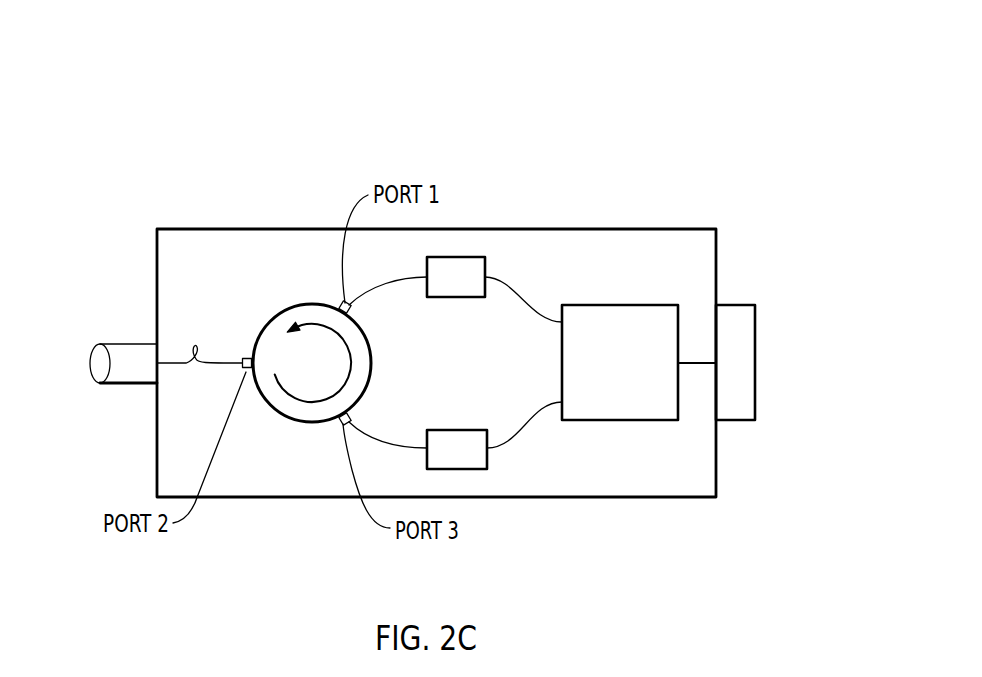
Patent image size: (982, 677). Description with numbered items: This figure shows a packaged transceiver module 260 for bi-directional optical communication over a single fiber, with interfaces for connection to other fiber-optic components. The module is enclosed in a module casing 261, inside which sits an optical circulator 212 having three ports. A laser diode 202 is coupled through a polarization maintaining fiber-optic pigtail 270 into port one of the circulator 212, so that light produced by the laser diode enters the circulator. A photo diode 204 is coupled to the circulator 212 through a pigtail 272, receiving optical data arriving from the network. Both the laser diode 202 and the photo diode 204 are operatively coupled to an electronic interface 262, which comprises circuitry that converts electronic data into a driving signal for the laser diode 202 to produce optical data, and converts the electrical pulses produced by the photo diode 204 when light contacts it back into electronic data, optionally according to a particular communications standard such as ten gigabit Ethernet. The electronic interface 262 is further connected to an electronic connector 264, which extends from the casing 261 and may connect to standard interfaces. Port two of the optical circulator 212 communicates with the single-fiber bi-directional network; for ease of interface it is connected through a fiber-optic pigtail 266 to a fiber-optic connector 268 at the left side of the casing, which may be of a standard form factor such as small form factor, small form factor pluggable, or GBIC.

The packaged transceiver module 260 is at (533, 106).
The module casing 261 is at (233, 229).
The laser diode 202 is at (455, 257).
The photo diode 204 is at (457, 470).
The optical circulator 212 is at (312, 424).
The electronic interface 262 is at (655, 305).
The electronic connector 264 is at (757, 363).
The fiber-optic pigtail 266 is at (192, 362).
The fiber-optic connector 268 is at (100, 385).
The polarization maintaining fiber-optic pigtail 270 is at (387, 283).
The pigtail 272 is at (391, 447).